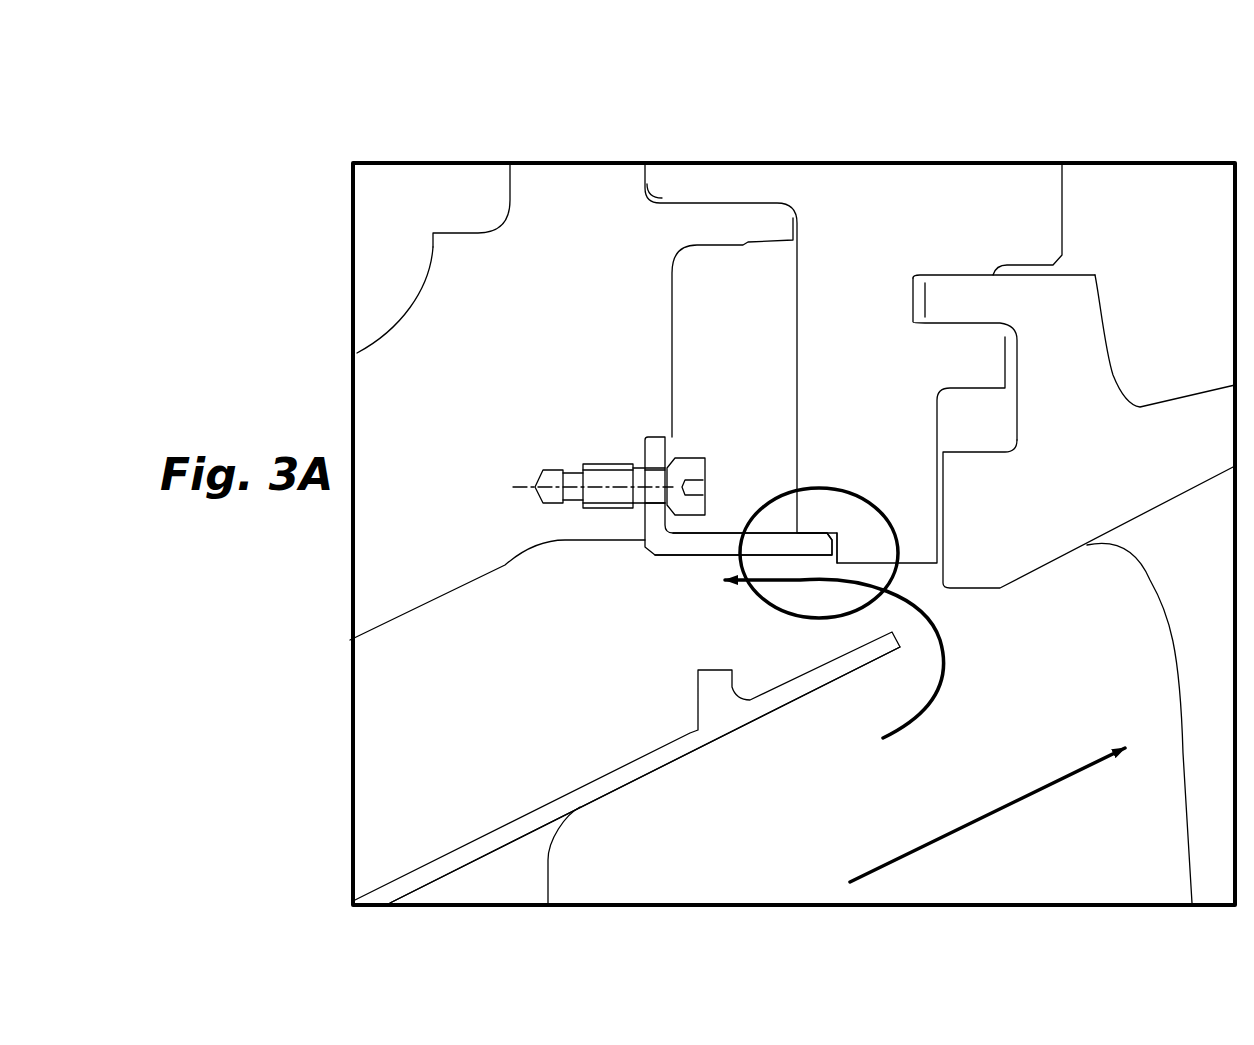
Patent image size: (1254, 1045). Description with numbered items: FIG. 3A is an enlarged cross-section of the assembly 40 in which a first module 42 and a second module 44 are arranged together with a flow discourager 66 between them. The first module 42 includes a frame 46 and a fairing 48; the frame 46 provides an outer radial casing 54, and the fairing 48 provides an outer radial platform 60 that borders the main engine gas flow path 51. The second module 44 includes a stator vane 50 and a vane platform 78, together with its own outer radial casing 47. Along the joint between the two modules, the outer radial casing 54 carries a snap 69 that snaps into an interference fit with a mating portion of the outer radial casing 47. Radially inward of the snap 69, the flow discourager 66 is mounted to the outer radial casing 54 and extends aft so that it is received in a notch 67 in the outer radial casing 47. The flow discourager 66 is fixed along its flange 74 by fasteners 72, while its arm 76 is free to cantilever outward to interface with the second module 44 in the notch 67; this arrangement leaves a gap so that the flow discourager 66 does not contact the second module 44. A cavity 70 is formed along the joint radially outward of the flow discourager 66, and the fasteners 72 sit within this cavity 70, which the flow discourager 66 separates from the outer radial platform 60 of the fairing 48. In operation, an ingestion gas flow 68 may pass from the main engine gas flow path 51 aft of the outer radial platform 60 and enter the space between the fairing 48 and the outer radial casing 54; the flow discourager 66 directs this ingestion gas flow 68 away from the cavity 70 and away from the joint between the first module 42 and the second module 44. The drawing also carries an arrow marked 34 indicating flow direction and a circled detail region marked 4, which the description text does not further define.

The assembly 40 is at (535, 110).
The first module 42 is at (493, 140).
The second module 44 is at (935, 160).
The frame 46 is at (402, 299).
The outer radial casing 47 is at (946, 419).
The fairing 48 is at (558, 785).
The stator vane 50 is at (1152, 723).
The main engine gas flow path 51 is at (672, 849).
The outer radial casing 54 is at (497, 518).
The outer radial platform 60 is at (660, 755).
The flow discourager 66 is at (647, 430).
The notch 67 is at (845, 528).
The ingestion gas flow 68 is at (950, 653).
The snap 69 is at (723, 217).
The cavity 70 is at (739, 356).
The fasteners 72 is at (684, 468).
The flange 74 is at (663, 445).
The arm 76 is at (770, 547).
The vane platform 78 is at (1089, 431).
The flow direction arrow 34 is at (980, 820).
The detail view circle 4 is at (857, 497).